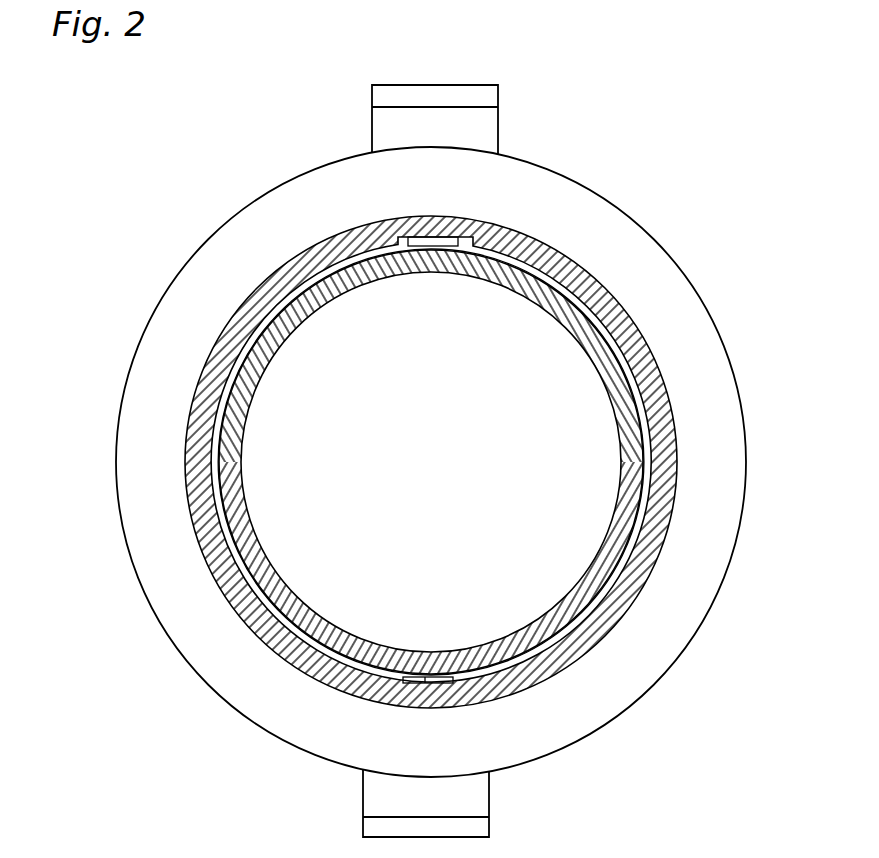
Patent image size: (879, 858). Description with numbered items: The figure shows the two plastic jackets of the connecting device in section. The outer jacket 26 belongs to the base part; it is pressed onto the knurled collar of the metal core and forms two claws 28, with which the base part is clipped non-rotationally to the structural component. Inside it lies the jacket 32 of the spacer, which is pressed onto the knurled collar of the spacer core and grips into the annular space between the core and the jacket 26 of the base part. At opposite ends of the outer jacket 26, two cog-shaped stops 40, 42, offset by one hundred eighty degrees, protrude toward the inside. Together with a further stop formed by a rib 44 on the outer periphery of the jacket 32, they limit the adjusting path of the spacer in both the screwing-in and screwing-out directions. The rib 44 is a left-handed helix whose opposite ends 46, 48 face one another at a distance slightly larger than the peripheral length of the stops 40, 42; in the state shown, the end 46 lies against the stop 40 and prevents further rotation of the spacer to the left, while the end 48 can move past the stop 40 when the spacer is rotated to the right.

The plastic jacket 26 is at (620, 293).
The claws 28 is at (480, 95).
The plastic jacket 32 is at (610, 394).
The cog-shaped stop 40 is at (430, 238).
The cog-shaped stop 42 is at (418, 700).
The rib 44 is at (613, 612).
The end of the rib 46 is at (488, 243).
The end of the rib 48 is at (378, 242).